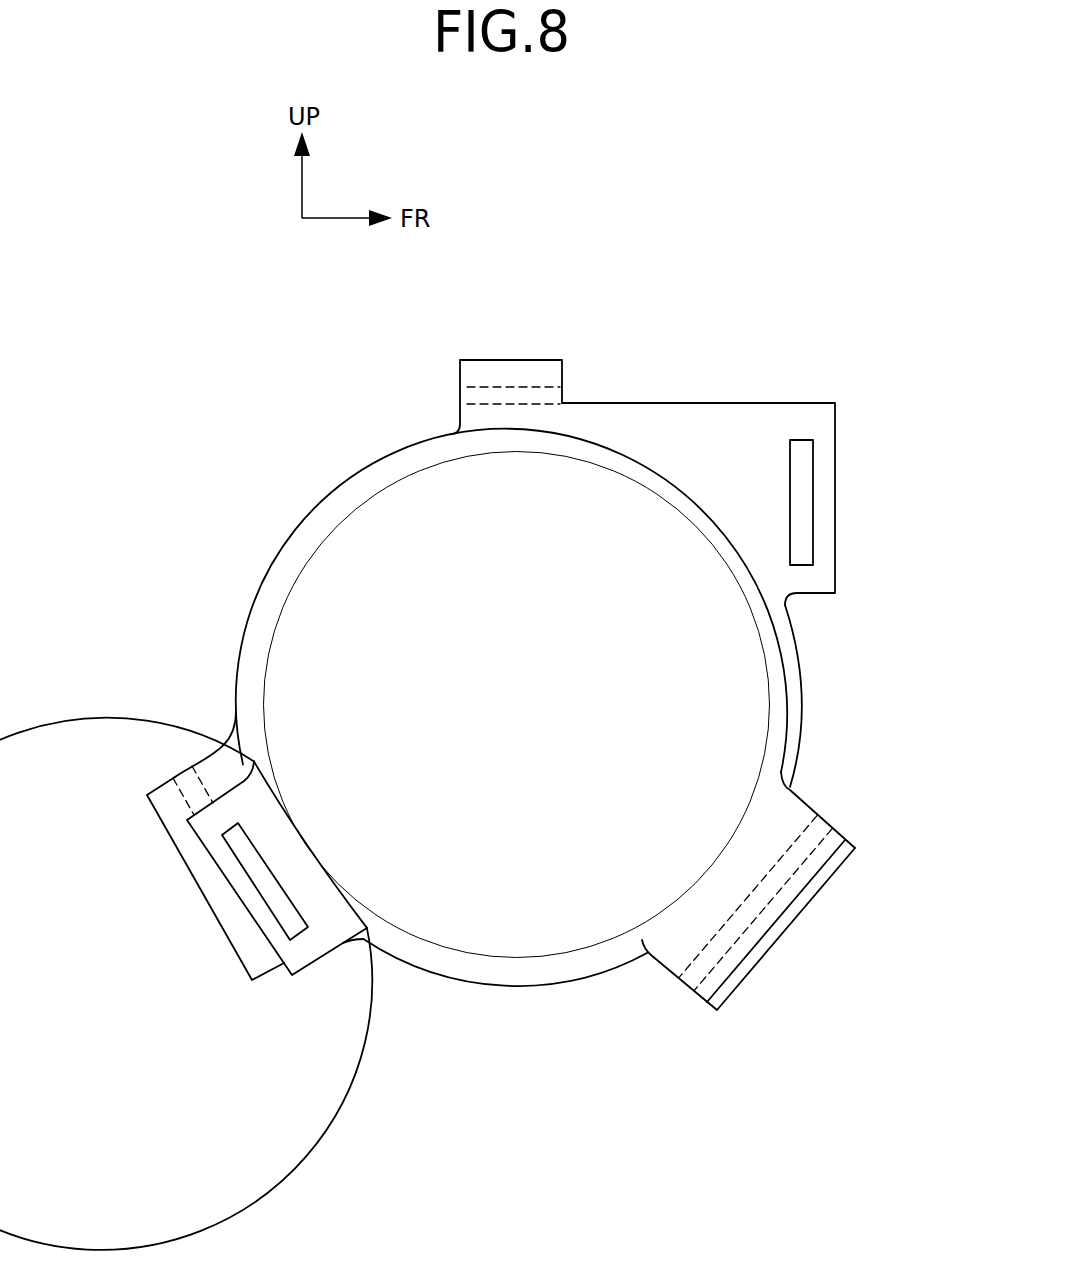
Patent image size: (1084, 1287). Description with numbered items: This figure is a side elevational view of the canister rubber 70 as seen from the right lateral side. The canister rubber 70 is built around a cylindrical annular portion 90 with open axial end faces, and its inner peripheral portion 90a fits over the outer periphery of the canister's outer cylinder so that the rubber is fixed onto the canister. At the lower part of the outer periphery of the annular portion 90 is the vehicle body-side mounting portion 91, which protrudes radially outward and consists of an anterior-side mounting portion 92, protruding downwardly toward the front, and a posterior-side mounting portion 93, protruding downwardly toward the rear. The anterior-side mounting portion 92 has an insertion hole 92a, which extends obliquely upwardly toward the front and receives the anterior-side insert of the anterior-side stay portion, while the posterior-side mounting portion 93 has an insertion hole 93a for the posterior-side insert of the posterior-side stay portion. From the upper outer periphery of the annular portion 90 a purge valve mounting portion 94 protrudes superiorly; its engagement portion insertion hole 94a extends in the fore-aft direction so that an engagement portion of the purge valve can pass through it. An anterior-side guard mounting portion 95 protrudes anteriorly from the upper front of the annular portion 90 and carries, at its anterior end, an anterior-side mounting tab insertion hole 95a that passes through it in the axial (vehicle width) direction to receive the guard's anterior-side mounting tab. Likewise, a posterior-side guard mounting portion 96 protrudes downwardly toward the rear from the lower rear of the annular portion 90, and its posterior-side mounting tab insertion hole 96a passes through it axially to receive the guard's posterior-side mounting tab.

The canister rubber 70 is at (549, 241).
The annular portion 90 is at (357, 497).
The inner peripheral portion 90a is at (342, 529).
The vehicle body-side mounting portion 91 is at (657, 1122).
The anterior-side mounting portion 92 is at (718, 1010).
The insertion hole 92a is at (772, 905).
The posterior-side mounting portion 93 is at (255, 980).
The insertion hole 93a is at (190, 798).
The purge valve mounting portion 94 is at (543, 360).
The engagement portion insertion hole 94a is at (517, 390).
The anterior-side guard mounting portion 95 is at (808, 403).
The anterior-side mounting tab insertion hole 95a is at (794, 487).
The posterior-side guard mounting portion 96 is at (250, 912).
The posterior-side mounting tab insertion hole 96a is at (267, 867).